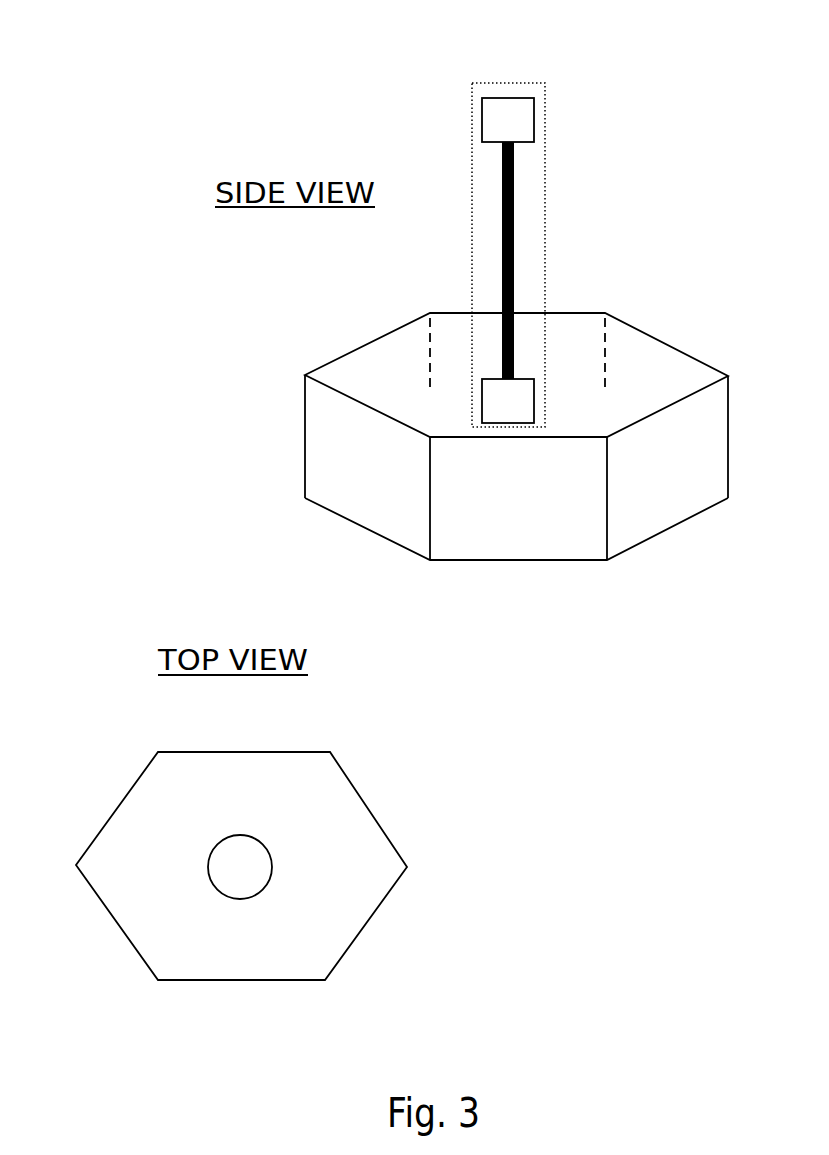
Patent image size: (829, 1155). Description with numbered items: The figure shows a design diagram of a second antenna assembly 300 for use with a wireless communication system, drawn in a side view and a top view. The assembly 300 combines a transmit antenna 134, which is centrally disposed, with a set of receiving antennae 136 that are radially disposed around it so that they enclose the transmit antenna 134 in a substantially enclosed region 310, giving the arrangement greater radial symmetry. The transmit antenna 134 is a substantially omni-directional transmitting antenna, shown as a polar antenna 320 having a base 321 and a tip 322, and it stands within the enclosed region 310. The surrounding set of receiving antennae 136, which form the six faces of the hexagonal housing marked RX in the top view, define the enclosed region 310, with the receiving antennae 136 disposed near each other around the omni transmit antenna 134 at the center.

The assembly 300 is at (163, 96).
The enclosed region 310 is at (516, 436).
The polar antenna 320 is at (545, 178).
The base 321 is at (524, 412).
The tip 322 is at (524, 131).
The transmit antenna 134 is at (513, 255).
The receiving antennae 136 is at (378, 500).